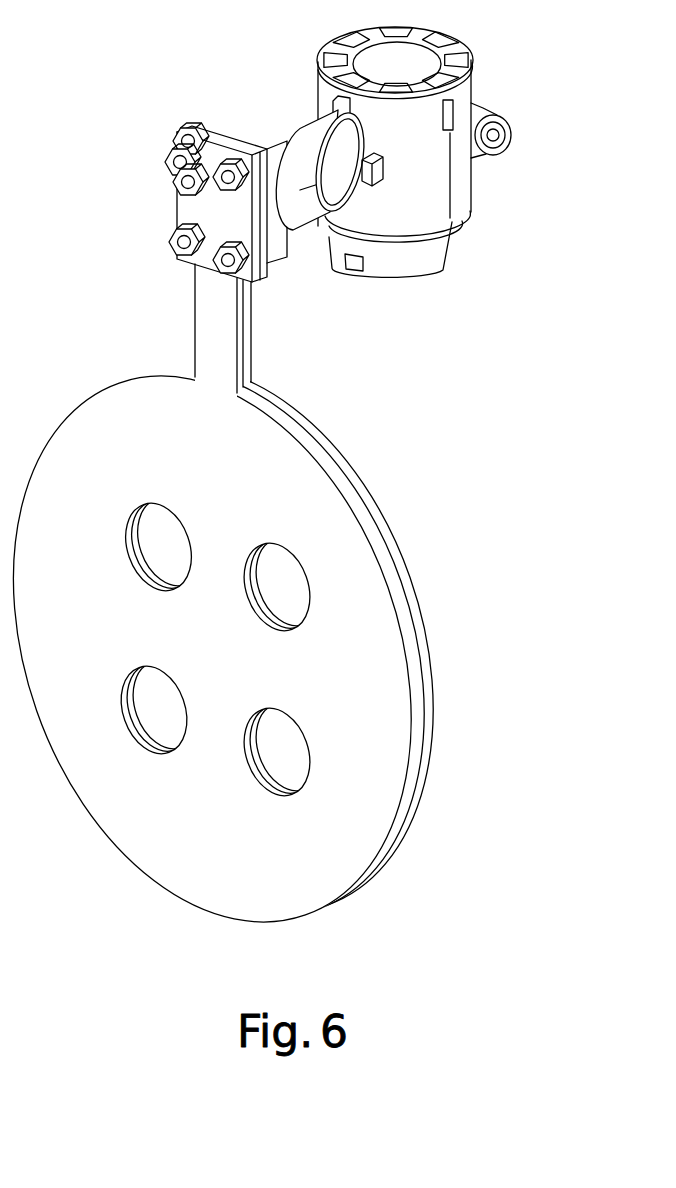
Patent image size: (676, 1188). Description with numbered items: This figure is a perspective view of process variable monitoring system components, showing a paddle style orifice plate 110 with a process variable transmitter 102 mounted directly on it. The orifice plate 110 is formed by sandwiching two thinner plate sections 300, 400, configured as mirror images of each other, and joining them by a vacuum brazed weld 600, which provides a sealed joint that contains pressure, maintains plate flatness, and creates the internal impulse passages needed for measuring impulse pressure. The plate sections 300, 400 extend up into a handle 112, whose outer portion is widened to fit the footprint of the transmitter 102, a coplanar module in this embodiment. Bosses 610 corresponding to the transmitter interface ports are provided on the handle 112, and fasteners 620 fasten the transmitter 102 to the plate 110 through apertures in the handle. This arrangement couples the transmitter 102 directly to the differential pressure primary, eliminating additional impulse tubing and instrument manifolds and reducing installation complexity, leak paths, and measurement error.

The process variable transmitter 102 is at (467, 87).
The paddle style orifice plate 110 is at (432, 482).
The handle 112 is at (222, 353).
The paddle style orifice plate section 300 is at (378, 697).
The plate section 400 is at (425, 797).
The vacuum brazed weld 600 is at (413, 622).
The bosses 610 is at (177, 183).
The fasteners 620 is at (173, 152).